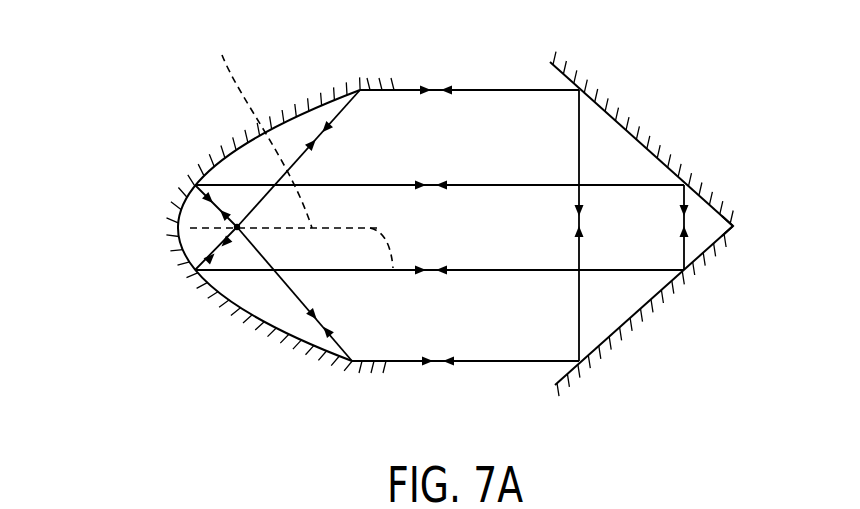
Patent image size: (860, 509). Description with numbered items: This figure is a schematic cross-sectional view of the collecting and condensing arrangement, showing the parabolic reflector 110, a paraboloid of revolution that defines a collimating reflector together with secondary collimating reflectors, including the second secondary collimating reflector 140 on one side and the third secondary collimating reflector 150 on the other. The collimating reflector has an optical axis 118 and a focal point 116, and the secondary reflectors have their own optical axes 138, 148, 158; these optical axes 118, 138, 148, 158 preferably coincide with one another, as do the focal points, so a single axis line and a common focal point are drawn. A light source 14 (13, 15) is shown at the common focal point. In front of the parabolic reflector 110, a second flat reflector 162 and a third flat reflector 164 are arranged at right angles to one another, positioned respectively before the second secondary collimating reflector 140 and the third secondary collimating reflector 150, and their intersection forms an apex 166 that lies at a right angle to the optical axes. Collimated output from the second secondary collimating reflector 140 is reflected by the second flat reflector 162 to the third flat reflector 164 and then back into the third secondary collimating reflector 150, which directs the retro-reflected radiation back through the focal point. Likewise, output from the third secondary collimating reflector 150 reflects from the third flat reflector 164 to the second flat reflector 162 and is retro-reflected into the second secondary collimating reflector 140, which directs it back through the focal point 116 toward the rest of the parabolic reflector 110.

The parabolic reflector 110 is at (254, 252).
The focal point 116 is at (177, 211).
The light source 14 is at (136, 182).
The light source (alternate) 13 is at (237, 227).
The light source (alternate) 15 is at (233, 226).
The optical axis 148 is at (232, 124).
The optical axis 138 is at (267, 141).
The optical axis 158 is at (267, 141).
The optical axis 118 is at (300, 265).
The third secondary collimating reflector 150 is at (323, 105).
The second secondary collimating reflector 140 is at (330, 348).
The third flat reflector 164 is at (618, 120).
The second flat reflector 162 is at (620, 327).
The apex 166 is at (733, 226).